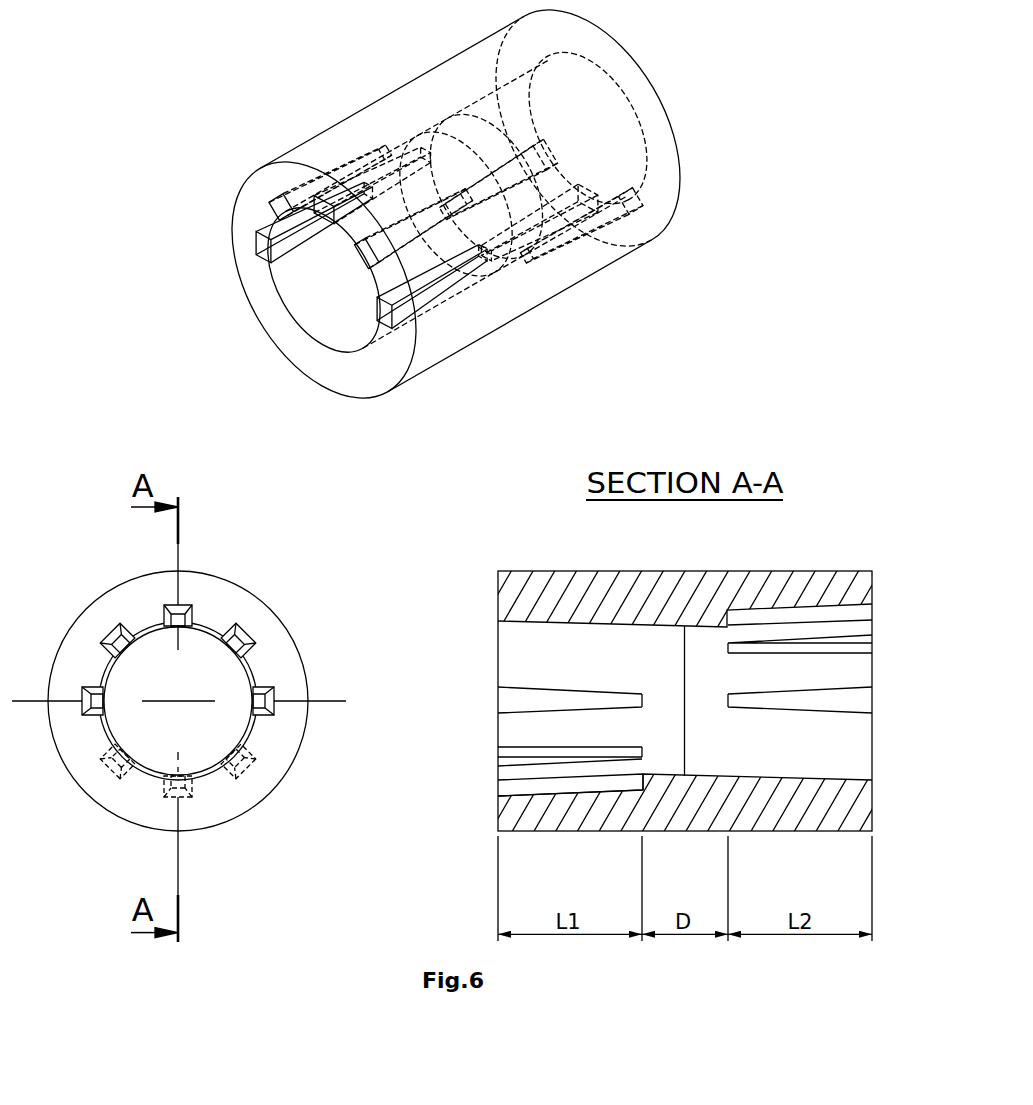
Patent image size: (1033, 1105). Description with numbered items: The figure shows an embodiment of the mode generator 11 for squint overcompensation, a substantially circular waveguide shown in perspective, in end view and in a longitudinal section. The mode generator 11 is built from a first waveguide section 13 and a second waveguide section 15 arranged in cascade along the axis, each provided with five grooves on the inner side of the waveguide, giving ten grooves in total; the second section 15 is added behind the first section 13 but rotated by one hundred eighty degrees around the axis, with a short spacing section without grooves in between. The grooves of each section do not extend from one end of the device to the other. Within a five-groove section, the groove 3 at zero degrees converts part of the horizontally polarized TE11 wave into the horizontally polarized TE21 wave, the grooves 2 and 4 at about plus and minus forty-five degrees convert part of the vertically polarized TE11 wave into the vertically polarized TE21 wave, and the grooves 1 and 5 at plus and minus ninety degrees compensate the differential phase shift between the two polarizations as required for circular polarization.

The mode generator 11 is at (437, 220).
The first waveguide section 13 is at (683, 685).
The second waveguide section 15 is at (683, 685).
The groove 1 is at (105, 701).
The groove 2 is at (123, 647).
The groove 3 is at (180, 632).
The groove 4 is at (232, 647).
The groove 5 is at (252, 701).